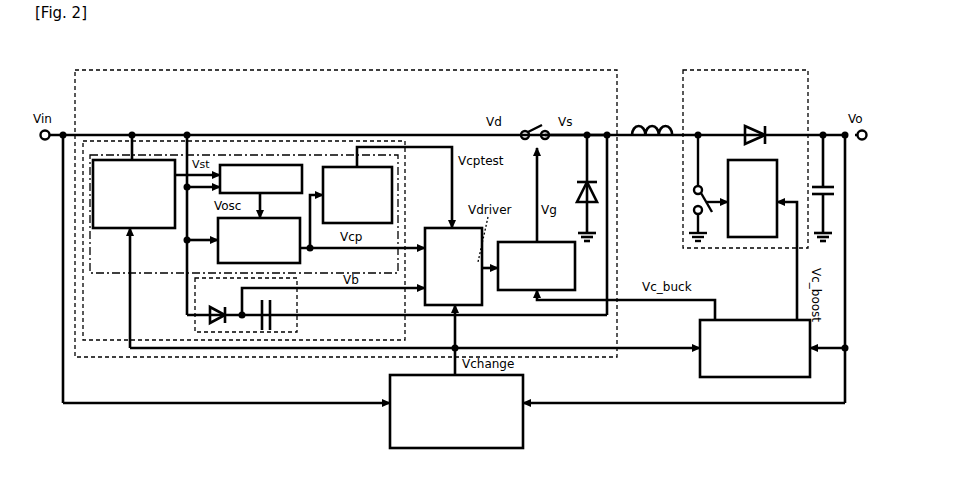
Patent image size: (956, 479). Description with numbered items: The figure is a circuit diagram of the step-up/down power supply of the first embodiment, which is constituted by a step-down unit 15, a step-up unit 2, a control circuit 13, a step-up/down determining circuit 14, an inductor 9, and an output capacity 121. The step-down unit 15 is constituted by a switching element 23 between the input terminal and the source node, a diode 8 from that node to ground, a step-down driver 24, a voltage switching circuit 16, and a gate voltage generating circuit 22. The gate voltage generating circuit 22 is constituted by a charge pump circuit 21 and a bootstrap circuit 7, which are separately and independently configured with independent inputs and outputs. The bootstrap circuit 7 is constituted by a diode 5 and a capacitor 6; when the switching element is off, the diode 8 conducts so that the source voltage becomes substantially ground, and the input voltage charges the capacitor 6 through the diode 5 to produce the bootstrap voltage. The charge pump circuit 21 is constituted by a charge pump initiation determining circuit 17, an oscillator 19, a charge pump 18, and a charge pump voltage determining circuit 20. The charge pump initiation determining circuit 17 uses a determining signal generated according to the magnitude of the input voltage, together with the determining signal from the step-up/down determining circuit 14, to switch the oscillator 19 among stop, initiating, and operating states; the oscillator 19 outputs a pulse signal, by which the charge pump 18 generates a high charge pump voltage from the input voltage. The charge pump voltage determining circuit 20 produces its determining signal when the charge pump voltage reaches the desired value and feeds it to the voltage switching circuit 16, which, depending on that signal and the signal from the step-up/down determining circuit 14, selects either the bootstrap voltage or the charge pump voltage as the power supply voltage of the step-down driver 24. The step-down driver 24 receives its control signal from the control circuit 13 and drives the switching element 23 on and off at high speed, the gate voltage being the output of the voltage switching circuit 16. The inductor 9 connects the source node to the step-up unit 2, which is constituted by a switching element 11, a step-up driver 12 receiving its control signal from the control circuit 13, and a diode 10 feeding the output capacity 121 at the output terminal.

The step-up unit 2 is at (689, 72).
The diode 5 is at (218, 310).
The capacitor 6 is at (276, 319).
The bootstrap circuit 7 is at (197, 330).
The diode 8 is at (576, 181).
The inductor 9 is at (642, 120).
The diode 10 is at (740, 126).
The switching element 11 is at (692, 186).
The step-up driver 12 is at (750, 241).
The output capacity 121 is at (828, 208).
The control circuit 13 is at (702, 370).
The step-up/down determining circuit 14 is at (390, 440).
The step-down unit 15 is at (428, 72).
The voltage switching circuit 16 is at (436, 230).
The charge pump initiation determining circuit 17 is at (146, 230).
The charge pump 18 is at (306, 254).
The oscillator 19 is at (303, 180).
The charge pump voltage determining circuit 20 is at (392, 188).
The charge pump circuit 21 is at (263, 155).
The gate voltage generating circuit 22 is at (237, 143).
The switching element 23 is at (532, 124).
The step-down driver 24 is at (578, 276).